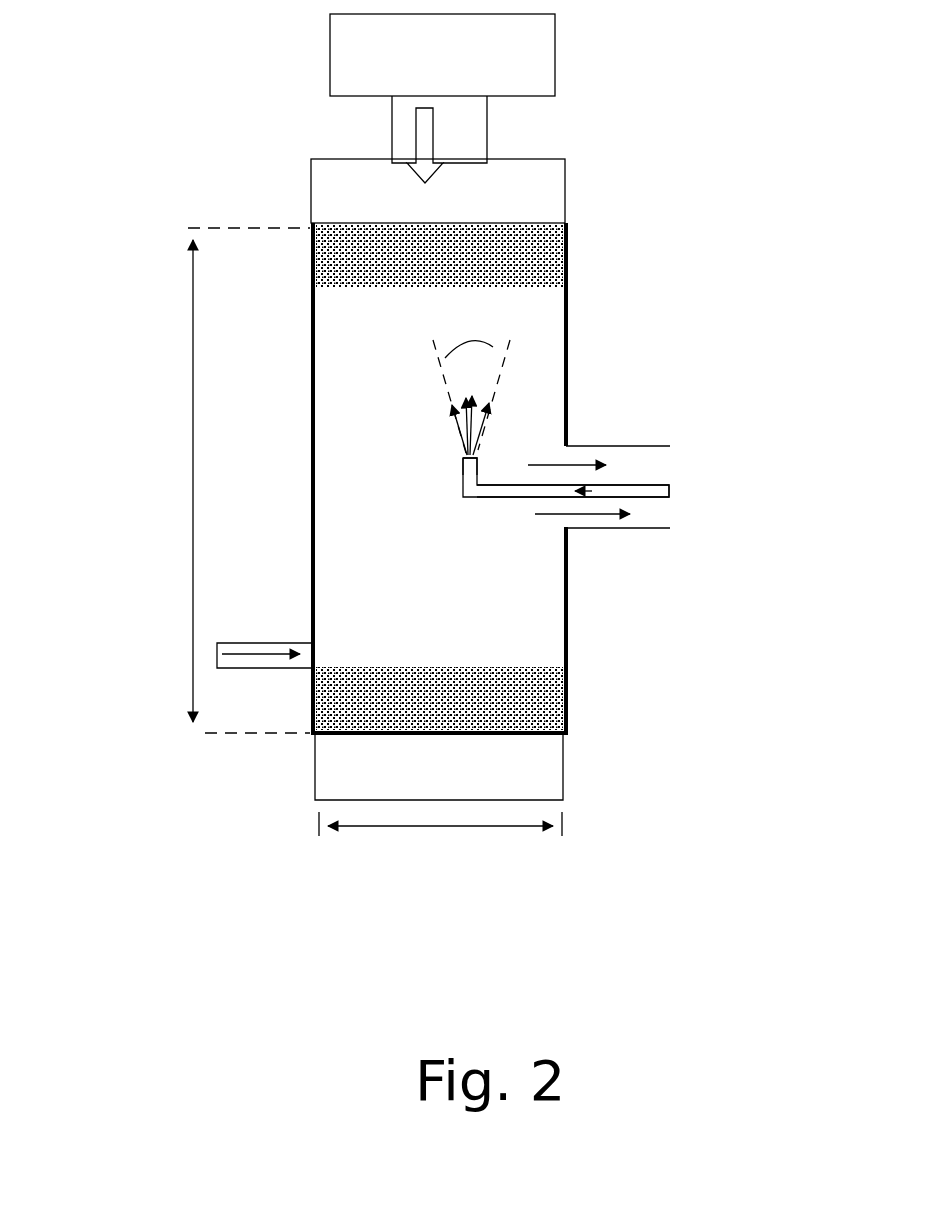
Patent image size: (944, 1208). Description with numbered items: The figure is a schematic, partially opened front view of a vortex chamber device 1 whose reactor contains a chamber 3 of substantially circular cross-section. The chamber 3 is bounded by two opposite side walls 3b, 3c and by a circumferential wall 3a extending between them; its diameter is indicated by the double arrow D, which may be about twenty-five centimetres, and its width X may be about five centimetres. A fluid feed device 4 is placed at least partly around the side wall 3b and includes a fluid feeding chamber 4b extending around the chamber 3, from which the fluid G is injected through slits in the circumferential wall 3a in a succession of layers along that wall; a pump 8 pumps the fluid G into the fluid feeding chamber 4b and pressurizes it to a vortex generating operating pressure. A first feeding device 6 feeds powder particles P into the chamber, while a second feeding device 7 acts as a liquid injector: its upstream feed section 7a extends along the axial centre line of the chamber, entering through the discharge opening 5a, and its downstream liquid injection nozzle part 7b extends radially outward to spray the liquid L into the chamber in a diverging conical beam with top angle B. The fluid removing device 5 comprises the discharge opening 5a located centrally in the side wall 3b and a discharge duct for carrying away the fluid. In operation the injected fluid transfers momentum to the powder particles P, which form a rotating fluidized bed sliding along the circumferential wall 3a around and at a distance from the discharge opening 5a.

The vortex chamber device 1 is at (270, 212).
The chamber 3 is at (567, 366).
The circumferential wall 3a is at (442, 735).
The side wall 3b is at (567, 325).
The side wall 3c is at (312, 440).
The fluid feed device 4 is at (570, 175).
The fluid feeding chamber 4b is at (520, 212).
The fluid removing device 5 is at (612, 530).
The discharge opening 5a is at (650, 455).
The first feeding device 6 is at (285, 640).
The second feeding device 7 is at (455, 511).
The upstream feed section 7a is at (648, 486).
The downstream liquid injection nozzle part 7b is at (462, 455).
The pump 8 is at (542, 62).
The fluid G is at (420, 148).
The spray beam top angle B is at (471, 379).
The liquid L is at (428, 400).
The powder particles P is at (408, 688).
The diameter of the chamber D is at (211, 480).
The width of the chamber X is at (440, 840).